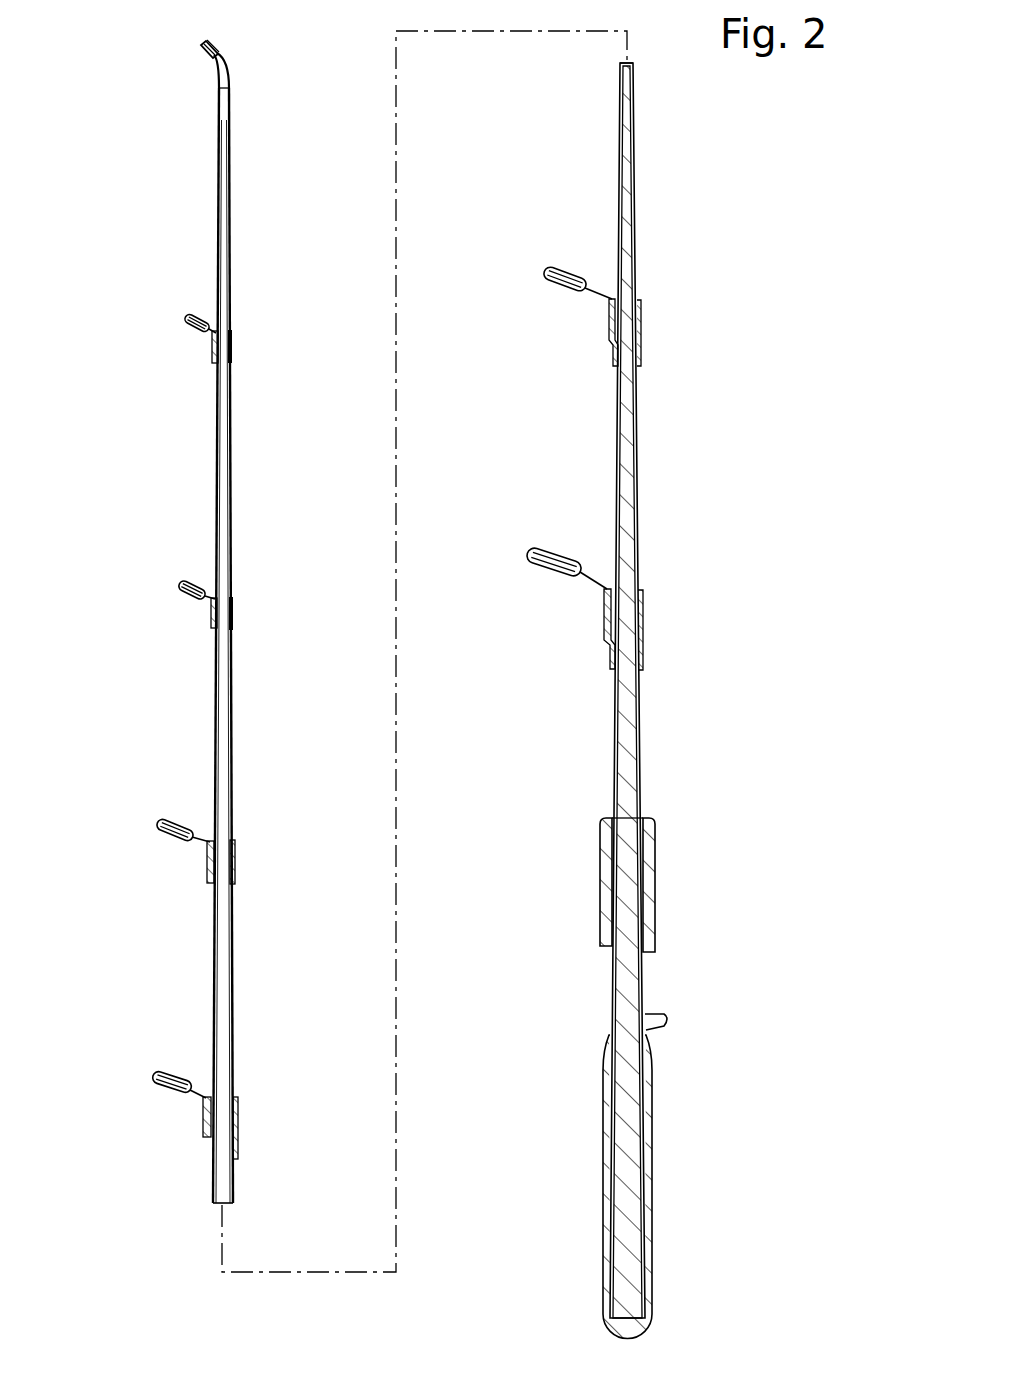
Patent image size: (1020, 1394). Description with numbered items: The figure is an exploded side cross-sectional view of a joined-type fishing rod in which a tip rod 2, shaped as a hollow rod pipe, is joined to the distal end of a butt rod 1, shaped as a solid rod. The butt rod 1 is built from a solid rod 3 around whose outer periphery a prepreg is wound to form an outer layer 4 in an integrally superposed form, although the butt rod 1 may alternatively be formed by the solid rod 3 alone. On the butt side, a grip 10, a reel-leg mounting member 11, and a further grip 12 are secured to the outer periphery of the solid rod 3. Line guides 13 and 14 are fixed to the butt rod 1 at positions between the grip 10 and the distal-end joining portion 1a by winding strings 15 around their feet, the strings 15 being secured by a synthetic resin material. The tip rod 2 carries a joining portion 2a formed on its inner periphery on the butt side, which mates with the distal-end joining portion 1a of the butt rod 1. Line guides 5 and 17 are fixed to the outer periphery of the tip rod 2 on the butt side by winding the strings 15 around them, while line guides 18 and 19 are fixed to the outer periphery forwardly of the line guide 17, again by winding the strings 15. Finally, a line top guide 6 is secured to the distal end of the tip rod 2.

The butt rod 1 is at (650, 437).
The distal-end joining portion 1a is at (636, 72).
The tip rod 2 is at (200, 722).
The joining portion 2a is at (222, 1208).
The solid rod 3 is at (640, 552).
The outer layer 4 is at (640, 497).
The line guide 5 is at (154, 1078).
The line top guide 6 is at (196, 48).
The grip 10 is at (655, 1130).
The reel-leg mounting member 11 is at (652, 1040).
The grip 12 is at (656, 860).
The line guide 13 is at (528, 557).
The line guide 14 is at (544, 272).
The strings 15 is at (210, 347).
The line guide 17 is at (158, 826).
The line guide 18 is at (185, 588).
The line guide 19 is at (185, 324).